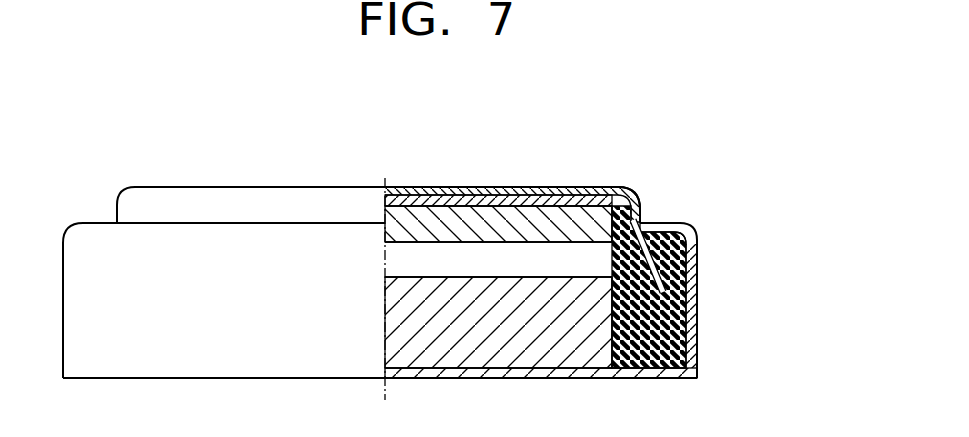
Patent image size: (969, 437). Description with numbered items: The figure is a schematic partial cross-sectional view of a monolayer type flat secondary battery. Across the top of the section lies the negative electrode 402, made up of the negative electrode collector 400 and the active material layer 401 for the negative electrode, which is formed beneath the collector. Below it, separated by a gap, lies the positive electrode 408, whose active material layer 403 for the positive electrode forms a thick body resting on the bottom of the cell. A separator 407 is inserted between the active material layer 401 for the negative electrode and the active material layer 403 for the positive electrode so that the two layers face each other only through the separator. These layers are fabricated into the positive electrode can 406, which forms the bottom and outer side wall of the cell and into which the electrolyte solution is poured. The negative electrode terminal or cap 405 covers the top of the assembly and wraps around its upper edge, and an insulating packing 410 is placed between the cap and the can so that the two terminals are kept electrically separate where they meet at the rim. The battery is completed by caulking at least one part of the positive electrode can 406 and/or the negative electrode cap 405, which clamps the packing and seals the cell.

The negative electrode collector 400 is at (538, 202).
The active material layer for the negative electrode 401 is at (592, 212).
The negative electrode 402 is at (521, 171).
The active material layer for the positive electrode 403 is at (588, 314).
The negative electrode terminal or cap 405 is at (428, 188).
The positive electrode can 406 is at (680, 373).
The separator 407 is at (470, 255).
The positive electrode 408 is at (616, 301).
The insulating packing 410 is at (668, 232).